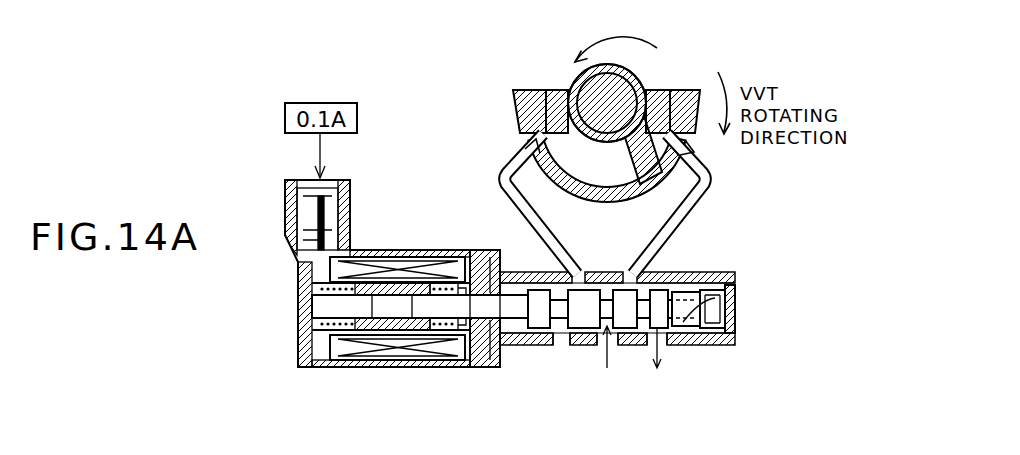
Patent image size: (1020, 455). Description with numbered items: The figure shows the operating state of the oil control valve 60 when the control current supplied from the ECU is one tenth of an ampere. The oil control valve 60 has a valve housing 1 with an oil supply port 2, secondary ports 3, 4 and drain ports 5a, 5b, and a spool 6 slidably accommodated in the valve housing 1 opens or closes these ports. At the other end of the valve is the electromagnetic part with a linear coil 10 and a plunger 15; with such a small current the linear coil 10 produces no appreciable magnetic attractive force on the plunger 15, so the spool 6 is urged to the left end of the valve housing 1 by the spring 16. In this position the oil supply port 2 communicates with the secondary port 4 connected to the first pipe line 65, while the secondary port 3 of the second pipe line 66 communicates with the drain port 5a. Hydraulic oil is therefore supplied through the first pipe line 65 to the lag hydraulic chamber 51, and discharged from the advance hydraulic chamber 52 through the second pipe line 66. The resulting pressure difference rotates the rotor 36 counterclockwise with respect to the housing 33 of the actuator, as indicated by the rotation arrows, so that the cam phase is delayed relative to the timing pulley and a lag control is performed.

The valve housing 1 is at (725, 272).
The oil supply port 2 is at (613, 340).
The secondary port 3 is at (652, 270).
The secondary port 4 is at (600, 272).
The drain port 5a is at (670, 347).
The drain port 5b is at (557, 340).
The spool 6 is at (538, 288).
The linear coil 10 is at (343, 355).
The plunger 15 is at (387, 348).
The spring 16 is at (737, 308).
The housing 33 is at (515, 110).
The rotor 36 is at (650, 62).
The lag hydraulic chamber 51 is at (558, 137).
The advance hydraulic chamber 52 is at (658, 137).
The oil control valve 60 is at (405, 250).
The first pipe line 65 is at (500, 190).
The second pipe line 66 is at (706, 185).